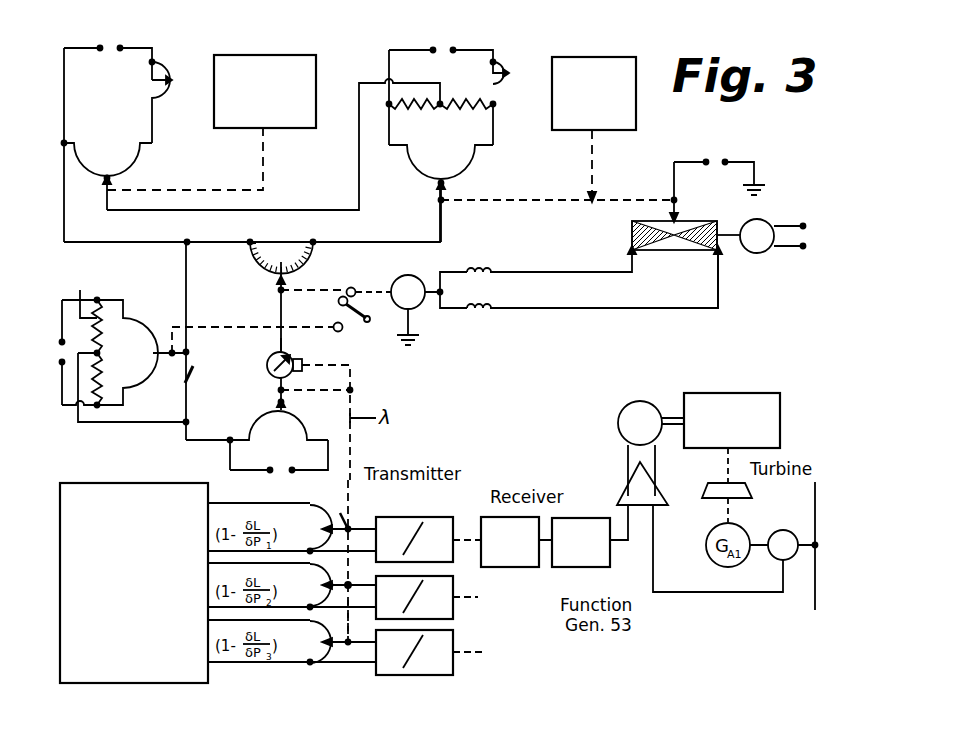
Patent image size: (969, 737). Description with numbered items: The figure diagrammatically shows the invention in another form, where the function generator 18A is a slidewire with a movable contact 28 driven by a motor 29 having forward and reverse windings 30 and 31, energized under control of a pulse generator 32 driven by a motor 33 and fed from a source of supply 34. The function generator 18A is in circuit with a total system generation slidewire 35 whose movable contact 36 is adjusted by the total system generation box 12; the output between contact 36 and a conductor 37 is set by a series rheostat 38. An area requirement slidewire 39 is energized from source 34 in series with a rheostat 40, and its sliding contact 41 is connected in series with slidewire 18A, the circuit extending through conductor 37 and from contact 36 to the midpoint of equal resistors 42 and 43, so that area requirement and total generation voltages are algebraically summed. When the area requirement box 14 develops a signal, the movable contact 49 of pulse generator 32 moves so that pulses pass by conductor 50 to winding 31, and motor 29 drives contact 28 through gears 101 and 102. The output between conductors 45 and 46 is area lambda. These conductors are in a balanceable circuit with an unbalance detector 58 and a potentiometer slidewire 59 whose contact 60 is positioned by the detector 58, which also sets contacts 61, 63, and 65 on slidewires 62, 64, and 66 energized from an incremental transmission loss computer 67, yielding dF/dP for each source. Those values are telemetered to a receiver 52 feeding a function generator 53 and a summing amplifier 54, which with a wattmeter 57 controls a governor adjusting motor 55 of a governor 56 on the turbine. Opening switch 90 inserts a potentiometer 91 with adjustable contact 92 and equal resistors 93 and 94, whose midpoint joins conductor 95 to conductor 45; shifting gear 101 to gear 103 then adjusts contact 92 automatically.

The total system generation box 12 is at (282, 58).
The area requirement box 14 is at (597, 63).
The function generator 18A is at (303, 268).
The movable contact 28 is at (280, 288).
The motor 29 is at (420, 307).
The forward winding 30 is at (473, 268).
The reverse winding 31 is at (473, 313).
The pulse generator 32 is at (665, 242).
The motor 33 is at (759, 254).
The source of supply 34 is at (115, 45).
The total system generation slidewire 35 is at (82, 158).
The movable contact 36 is at (105, 192).
The conductor 37 is at (62, 185).
The series rheostat 38 is at (154, 62).
The area requirement slidewire 39 is at (427, 173).
The rheostat 40 is at (503, 57).
The sliding contact 41 is at (438, 200).
The resistor 42 is at (418, 108).
The resistor 43 is at (473, 100).
The output conductor 45 is at (185, 432).
The output conductor 46 is at (282, 338).
The movable contact 49 is at (677, 212).
The conductor 50 is at (595, 312).
The receiver 52 is at (510, 562).
The function generator 53 is at (590, 593).
The summing amplifier 54 is at (647, 497).
The governor adjusting motor 55 is at (622, 413).
The governor 56 is at (728, 402).
The wattmeter 57 is at (785, 528).
The unbalance detector 58 is at (267, 362).
The potentiometer slidewire 59 is at (273, 412).
The contact 60 is at (279, 397).
The contact 61 is at (341, 512).
The slidewire 62 is at (317, 515).
The contact 63 is at (337, 597).
The slidewire 64 is at (323, 581).
The contact 65 is at (338, 645).
The slidewire 66 is at (320, 630).
The incremental transmission loss computer 67 is at (112, 678).
The switch 90 is at (194, 367).
The potentiometer 91 is at (146, 330).
The adjustable contact 92 is at (160, 357).
The resistor 93 is at (80, 290).
The resistor 94 is at (100, 383).
The conductor 95 is at (113, 422).
The driving gear 101 is at (338, 300).
The gear 102 is at (355, 290).
The gear 103 is at (345, 331).